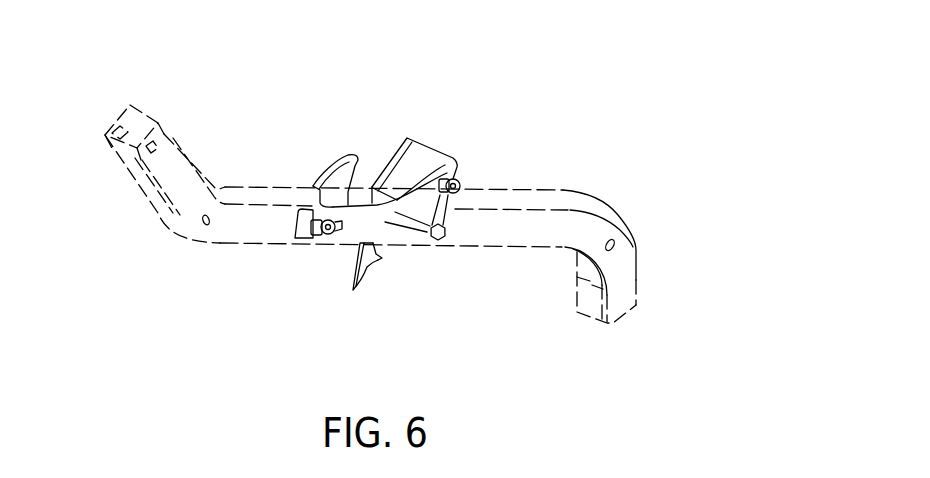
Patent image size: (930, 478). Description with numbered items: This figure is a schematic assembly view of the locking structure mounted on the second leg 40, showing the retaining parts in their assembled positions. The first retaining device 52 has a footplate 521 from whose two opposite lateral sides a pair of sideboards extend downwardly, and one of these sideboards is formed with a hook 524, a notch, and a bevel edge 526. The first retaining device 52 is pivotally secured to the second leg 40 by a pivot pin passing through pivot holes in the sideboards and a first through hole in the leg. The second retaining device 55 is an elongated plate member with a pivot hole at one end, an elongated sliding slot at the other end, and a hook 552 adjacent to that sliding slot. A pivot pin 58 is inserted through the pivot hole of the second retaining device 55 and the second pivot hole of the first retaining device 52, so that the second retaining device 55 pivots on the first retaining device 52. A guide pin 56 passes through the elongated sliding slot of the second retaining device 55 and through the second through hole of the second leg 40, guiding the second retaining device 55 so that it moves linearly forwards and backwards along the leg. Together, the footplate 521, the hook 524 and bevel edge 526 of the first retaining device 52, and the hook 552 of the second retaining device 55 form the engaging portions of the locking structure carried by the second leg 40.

The second leg 40 is at (592, 185).
The first retaining device 52 is at (399, 202).
The footplate 521 is at (437, 148).
The hook 524 is at (383, 257).
The bevel edge 526 is at (362, 287).
The second retaining device 55 is at (282, 236).
The hook 552 is at (313, 180).
The guide pin 56 is at (327, 240).
The pivot pin 58 is at (461, 182).